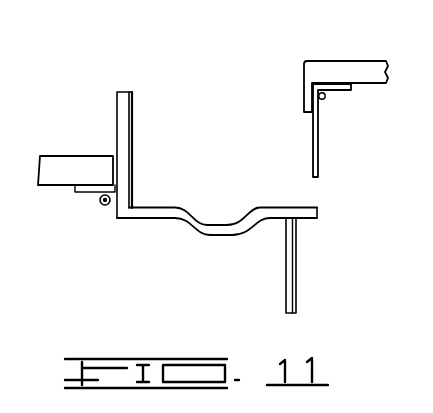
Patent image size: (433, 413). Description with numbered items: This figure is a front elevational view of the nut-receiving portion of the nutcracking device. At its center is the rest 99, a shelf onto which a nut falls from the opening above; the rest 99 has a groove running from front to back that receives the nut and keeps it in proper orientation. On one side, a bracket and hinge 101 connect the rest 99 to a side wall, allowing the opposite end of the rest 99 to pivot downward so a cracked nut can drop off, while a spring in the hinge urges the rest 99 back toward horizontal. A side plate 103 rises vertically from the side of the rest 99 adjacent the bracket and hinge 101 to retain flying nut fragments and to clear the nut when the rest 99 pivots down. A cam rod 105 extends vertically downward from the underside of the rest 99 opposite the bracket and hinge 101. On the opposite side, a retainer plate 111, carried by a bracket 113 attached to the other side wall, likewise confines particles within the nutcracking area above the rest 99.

The rest 99 is at (135, 213).
The bracket and hinge 101 is at (95, 165).
The side plate 103 is at (125, 112).
The cam rod 105 is at (293, 271).
The retainer plate 111 is at (318, 137).
The bracket 113 is at (346, 71).